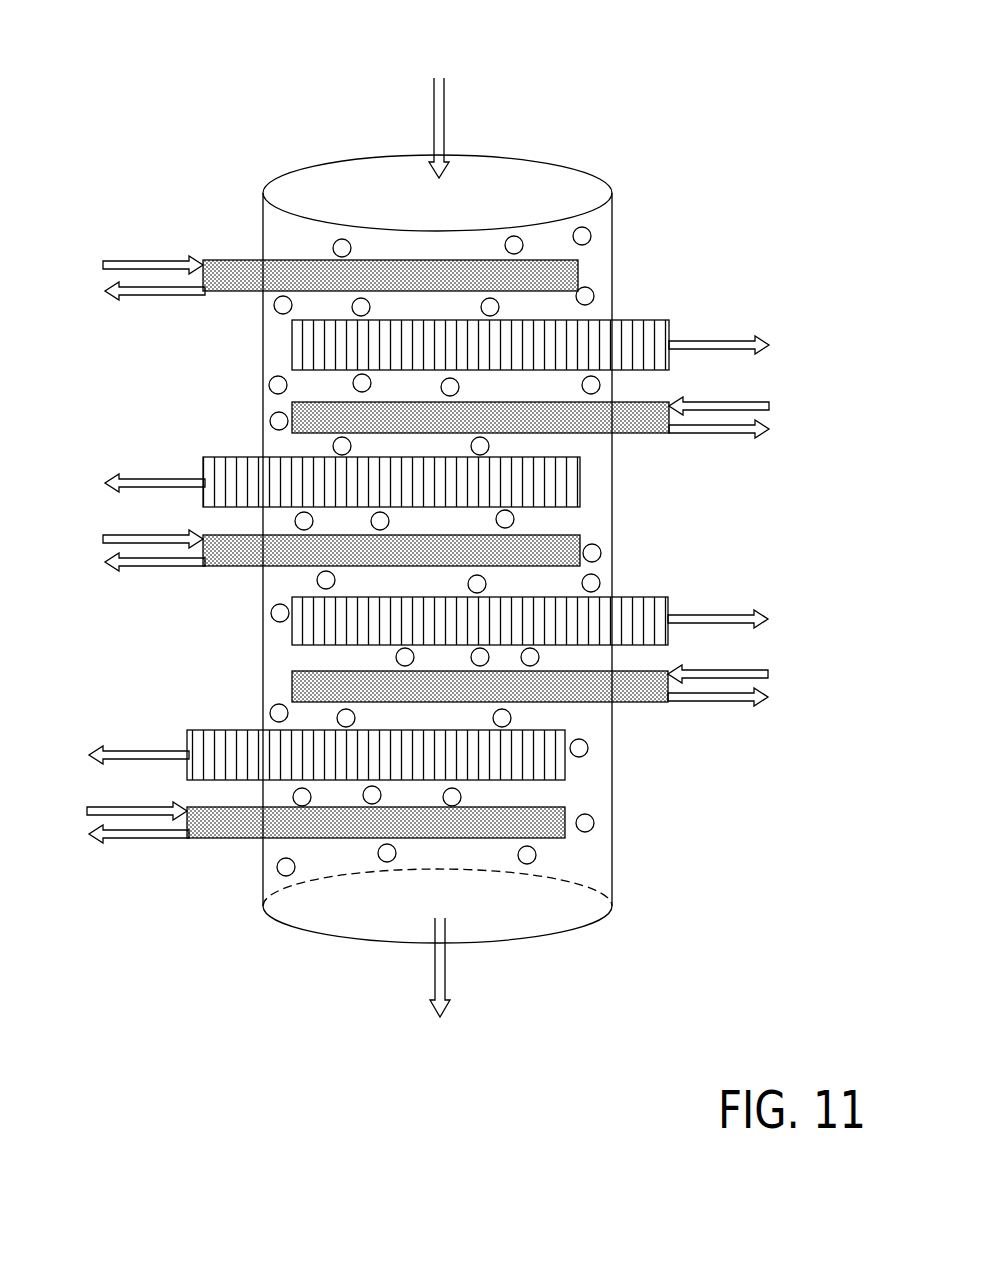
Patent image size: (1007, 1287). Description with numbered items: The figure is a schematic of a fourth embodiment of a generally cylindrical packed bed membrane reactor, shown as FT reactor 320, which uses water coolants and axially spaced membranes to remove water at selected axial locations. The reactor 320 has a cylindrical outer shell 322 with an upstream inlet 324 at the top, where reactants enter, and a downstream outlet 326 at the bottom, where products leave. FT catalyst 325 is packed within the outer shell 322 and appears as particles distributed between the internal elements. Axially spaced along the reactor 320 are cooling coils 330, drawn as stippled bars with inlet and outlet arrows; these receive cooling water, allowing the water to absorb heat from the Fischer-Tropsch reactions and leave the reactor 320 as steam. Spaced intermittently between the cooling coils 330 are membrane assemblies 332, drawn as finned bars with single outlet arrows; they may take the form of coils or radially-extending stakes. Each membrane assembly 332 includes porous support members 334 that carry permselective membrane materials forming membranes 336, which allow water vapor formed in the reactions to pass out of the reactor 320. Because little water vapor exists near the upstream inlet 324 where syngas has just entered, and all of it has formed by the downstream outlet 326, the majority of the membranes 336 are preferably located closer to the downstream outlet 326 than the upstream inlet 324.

The FT reactor 320 is at (652, 89).
The cylindrical outer shell 322 is at (613, 800).
The upstream inlet 324 is at (572, 178).
The FT catalyst 325 is at (599, 556).
The downstream outlet 326 is at (565, 918).
The cooling coils 330 is at (580, 271).
The membrane assemblies 332 is at (657, 320).
The porous support members 334 is at (196, 730).
The membranes 336 is at (221, 730).